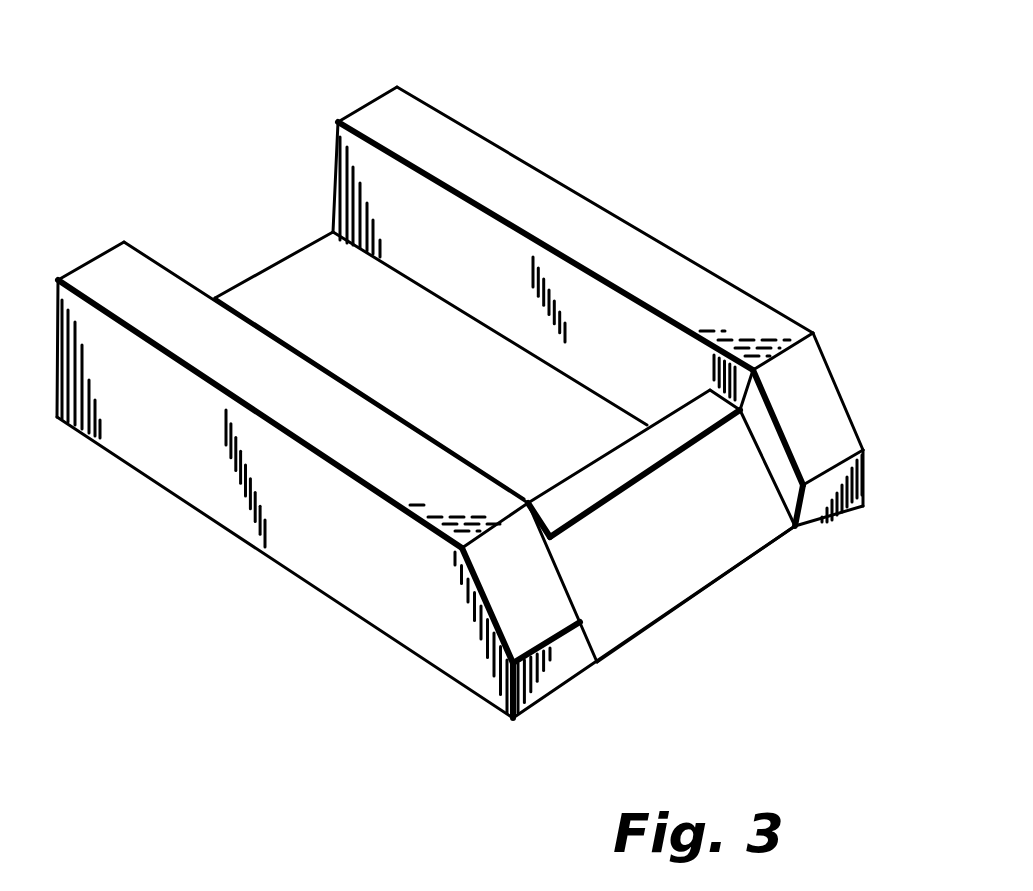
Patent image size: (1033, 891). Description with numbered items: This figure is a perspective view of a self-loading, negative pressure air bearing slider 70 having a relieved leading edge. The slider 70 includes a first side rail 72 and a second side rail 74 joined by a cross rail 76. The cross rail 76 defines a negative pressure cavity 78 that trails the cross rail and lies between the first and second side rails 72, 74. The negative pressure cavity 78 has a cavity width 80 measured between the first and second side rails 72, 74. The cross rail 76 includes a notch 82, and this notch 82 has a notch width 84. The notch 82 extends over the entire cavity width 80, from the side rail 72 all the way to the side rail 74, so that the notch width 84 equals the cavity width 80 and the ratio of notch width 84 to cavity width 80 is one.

The slider 70 is at (628, 180).
The first side rail 72 is at (96, 253).
The second side rail 74 is at (372, 103).
The cross rail 76 is at (628, 526).
The negative pressure cavity 78 is at (290, 278).
The cavity width 80 is at (697, 383).
The notch 82 is at (603, 597).
The notch width 84 is at (797, 540).